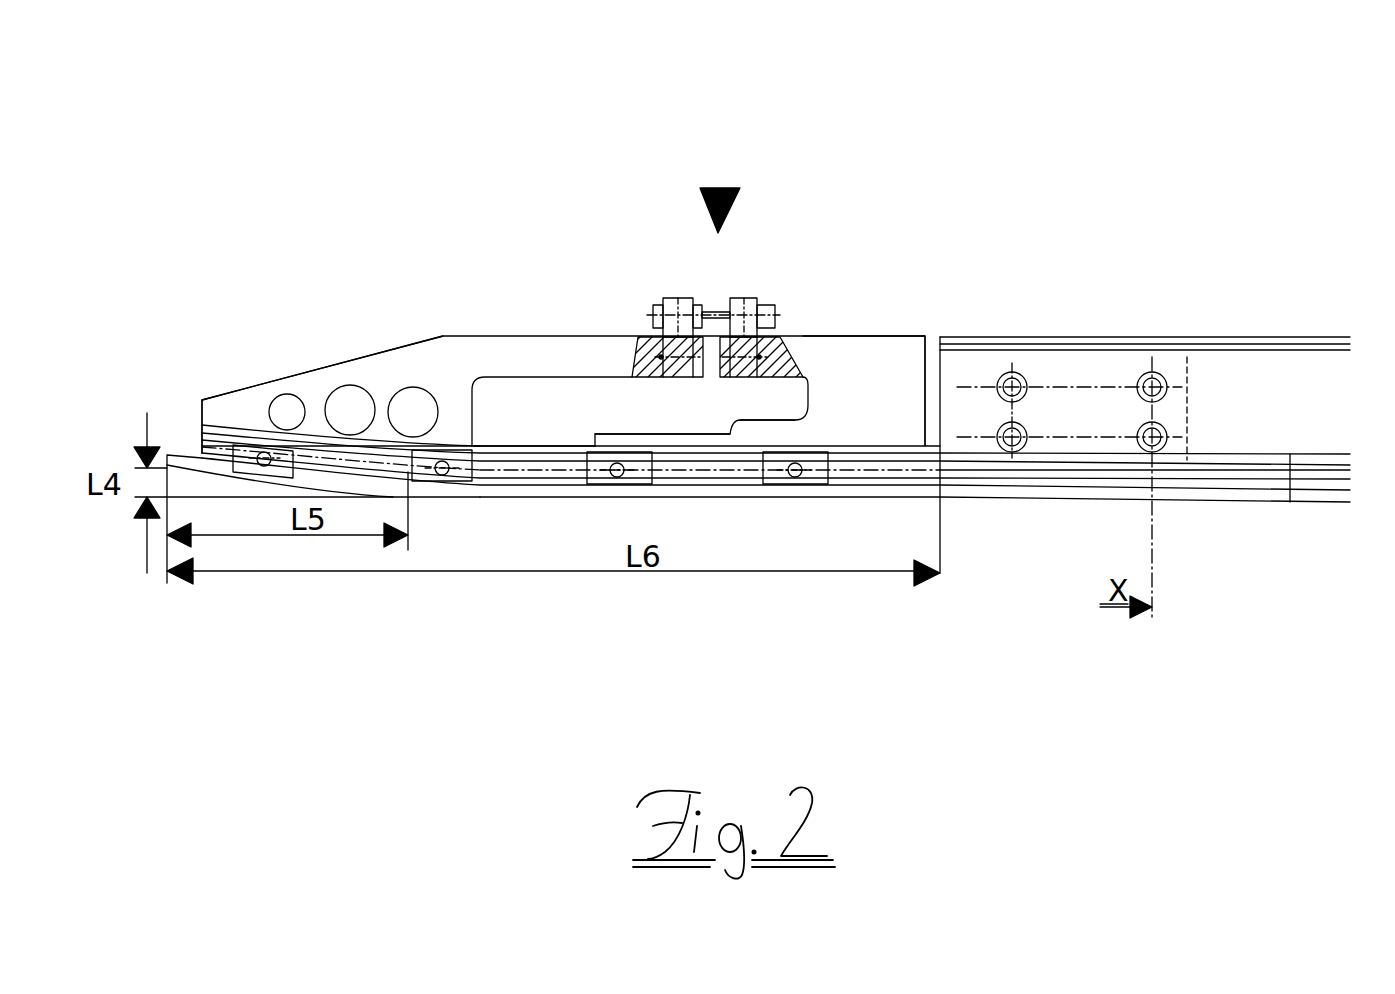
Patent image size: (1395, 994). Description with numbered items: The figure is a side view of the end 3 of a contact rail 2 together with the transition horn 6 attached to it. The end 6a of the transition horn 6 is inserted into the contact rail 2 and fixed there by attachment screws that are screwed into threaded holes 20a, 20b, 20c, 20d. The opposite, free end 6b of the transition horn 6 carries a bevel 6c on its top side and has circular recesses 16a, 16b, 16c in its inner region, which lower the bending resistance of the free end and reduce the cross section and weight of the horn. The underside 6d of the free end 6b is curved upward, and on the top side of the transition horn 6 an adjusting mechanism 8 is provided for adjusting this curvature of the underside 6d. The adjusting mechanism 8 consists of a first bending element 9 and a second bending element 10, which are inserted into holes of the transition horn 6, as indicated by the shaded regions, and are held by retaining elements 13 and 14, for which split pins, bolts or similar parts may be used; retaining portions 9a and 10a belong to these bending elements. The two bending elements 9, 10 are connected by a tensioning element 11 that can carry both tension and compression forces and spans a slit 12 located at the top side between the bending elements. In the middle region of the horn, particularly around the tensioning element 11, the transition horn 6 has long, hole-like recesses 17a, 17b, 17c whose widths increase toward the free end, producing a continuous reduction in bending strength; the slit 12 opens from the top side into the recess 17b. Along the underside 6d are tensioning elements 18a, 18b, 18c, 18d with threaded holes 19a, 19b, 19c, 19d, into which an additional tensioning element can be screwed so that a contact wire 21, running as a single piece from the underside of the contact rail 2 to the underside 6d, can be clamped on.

The contact rail 2 is at (1288, 373).
The end of the contact rail 3 is at (928, 340).
The transition horn 6 is at (477, 358).
The end of the transition horn 6a is at (987, 418).
The free end of the transition horn 6b is at (307, 427).
The bevel 6c is at (268, 383).
The underside of the transition horn 6d is at (1215, 493).
The adjusting mechanism 8 is at (718, 190).
The first bending element 9 is at (757, 300).
The threaded clamping block 9a is at (762, 338).
The second bending element 10 is at (667, 340).
The screw nut 10a is at (685, 298).
The tensioning element 11 is at (717, 308).
The slit 12 is at (710, 363).
The retaining element 13 is at (792, 338).
The retaining element 14 is at (650, 342).
The circular recess 16a is at (282, 403).
The circular recess 16b is at (340, 403).
The circular recess 16c is at (408, 403).
The long hole-like recess 17a is at (770, 397).
The long hole-like recess 17b is at (686, 408).
The long hole-like recess 17c is at (527, 413).
The tensioning element 18a is at (233, 473).
The tensioning element 18b is at (408, 460).
The tensioning element 18c is at (602, 475).
The tensioning element 18d is at (775, 478).
The threaded hole 19a is at (252, 463).
The threaded hole 19b is at (441, 470).
The threaded hole 19c is at (617, 473).
The threaded hole 19d is at (800, 478).
The threaded hole 20a is at (1012, 452).
The threaded hole 20b is at (1152, 453).
The threaded hole 20c is at (1012, 372).
The threaded hole 20d is at (1153, 372).
The contact wire 21 is at (1305, 497).